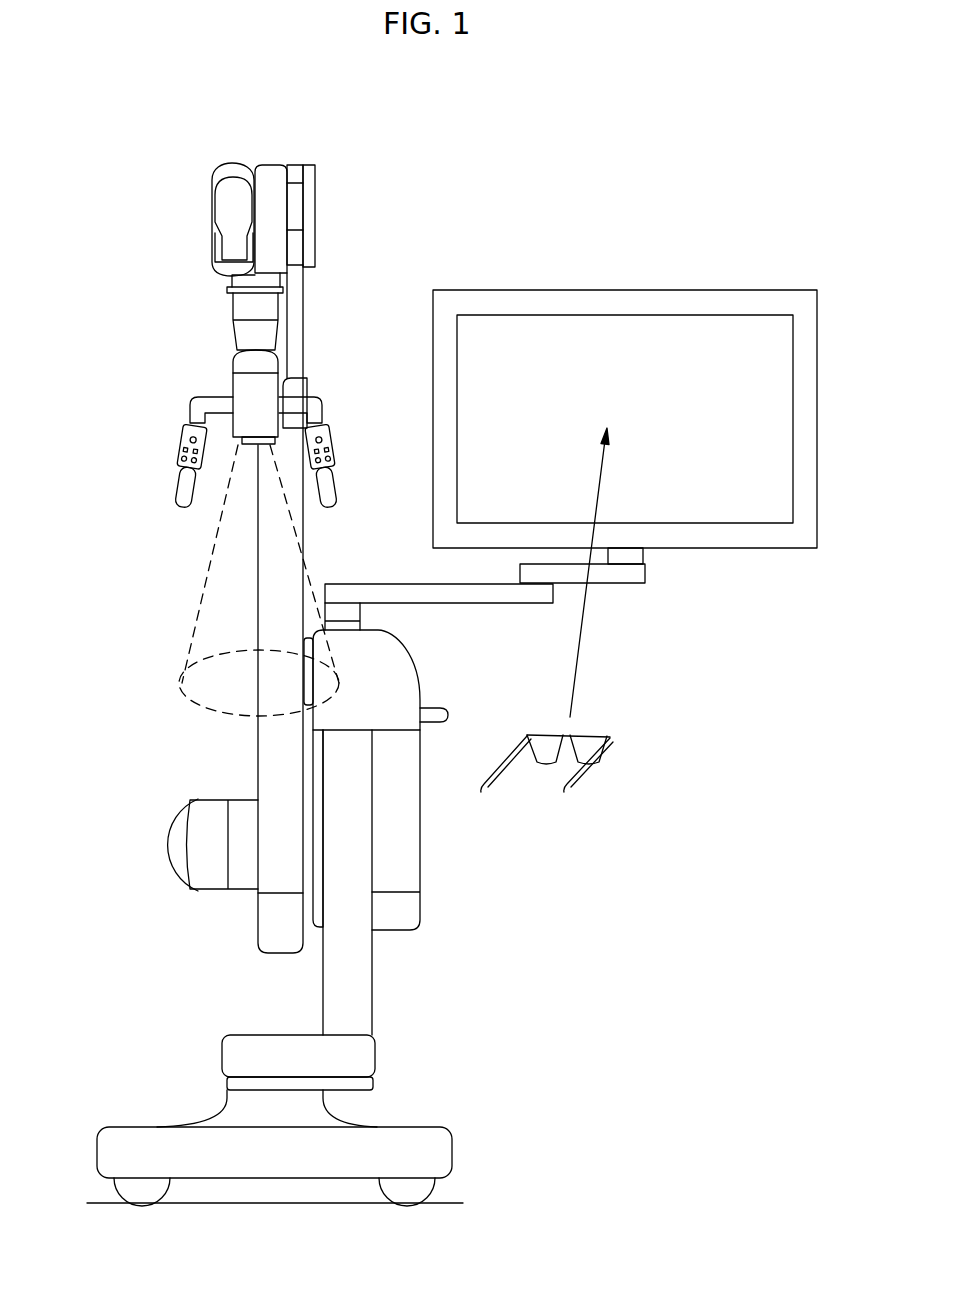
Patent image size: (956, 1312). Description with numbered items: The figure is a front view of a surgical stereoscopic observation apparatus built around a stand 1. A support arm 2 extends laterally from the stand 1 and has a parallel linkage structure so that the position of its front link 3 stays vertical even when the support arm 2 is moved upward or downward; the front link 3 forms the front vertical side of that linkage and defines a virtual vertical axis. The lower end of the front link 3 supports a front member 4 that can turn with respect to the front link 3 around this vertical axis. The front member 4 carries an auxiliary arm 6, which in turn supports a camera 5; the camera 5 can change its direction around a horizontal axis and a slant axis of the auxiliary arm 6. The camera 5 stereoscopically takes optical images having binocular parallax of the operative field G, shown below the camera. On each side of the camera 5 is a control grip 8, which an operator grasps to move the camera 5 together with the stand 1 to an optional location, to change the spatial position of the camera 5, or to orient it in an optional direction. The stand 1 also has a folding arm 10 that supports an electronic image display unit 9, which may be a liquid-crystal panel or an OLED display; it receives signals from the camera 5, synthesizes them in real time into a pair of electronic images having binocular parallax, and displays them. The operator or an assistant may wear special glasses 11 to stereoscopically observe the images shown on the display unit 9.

The stand 1 is at (348, 240).
The support arm 2 is at (232, 163).
The front link 3 is at (273, 167).
The front member 4 is at (233, 305).
The camera 5 is at (233, 385).
The auxiliary arm 6 is at (279, 330).
The control grip 8 is at (176, 490).
The electronic image display unit 9 is at (617, 290).
The folding arm 10 is at (465, 604).
The special glasses 11 is at (607, 753).
The operative field G is at (259, 580).